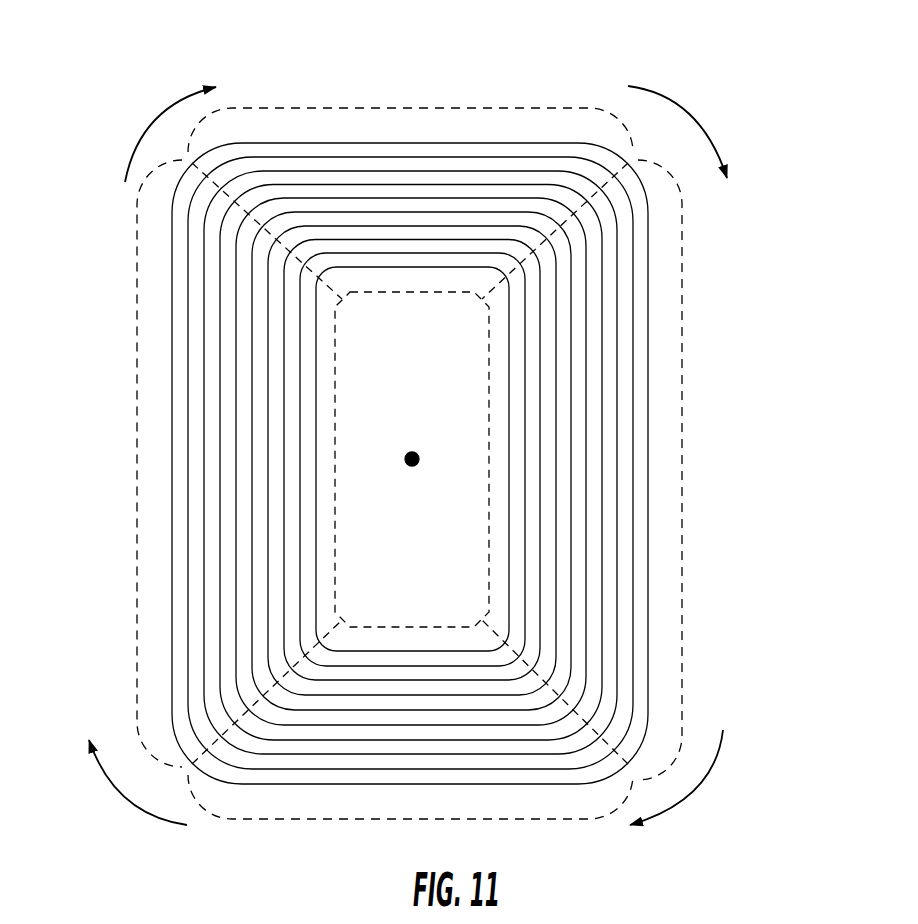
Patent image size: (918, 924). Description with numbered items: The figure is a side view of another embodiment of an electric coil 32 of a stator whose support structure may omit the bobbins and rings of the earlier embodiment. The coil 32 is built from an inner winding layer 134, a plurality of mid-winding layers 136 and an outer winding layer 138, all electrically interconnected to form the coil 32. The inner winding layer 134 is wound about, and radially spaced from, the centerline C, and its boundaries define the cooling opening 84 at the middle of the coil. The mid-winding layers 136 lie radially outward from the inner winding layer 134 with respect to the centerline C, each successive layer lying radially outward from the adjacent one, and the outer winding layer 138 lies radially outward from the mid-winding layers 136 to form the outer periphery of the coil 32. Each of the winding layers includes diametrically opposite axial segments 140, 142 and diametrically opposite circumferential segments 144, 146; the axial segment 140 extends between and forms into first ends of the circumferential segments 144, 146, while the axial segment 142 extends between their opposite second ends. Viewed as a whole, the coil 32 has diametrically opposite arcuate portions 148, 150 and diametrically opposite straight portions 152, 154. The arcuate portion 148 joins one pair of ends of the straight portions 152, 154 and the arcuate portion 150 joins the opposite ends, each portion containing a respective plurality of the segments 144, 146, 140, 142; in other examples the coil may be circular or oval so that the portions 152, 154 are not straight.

The electric coil 32 is at (704, 78).
The cooling opening 84 is at (431, 381).
The inner winding layer 134 is at (316, 596).
The mid-winding layers 136 is at (587, 412).
The outer winding layer 138 is at (648, 334).
The axial segment 140 is at (220, 462).
The axial segment 142 is at (602, 632).
The circumferential segment 144 is at (425, 157).
The circumferential segment 146 is at (435, 784).
The arcuate portion 148 is at (493, 108).
The arcuate portion 150 is at (513, 820).
The straight portion 152 is at (135, 665).
The straight portion 154 is at (682, 518).
The centerline C is at (412, 466).